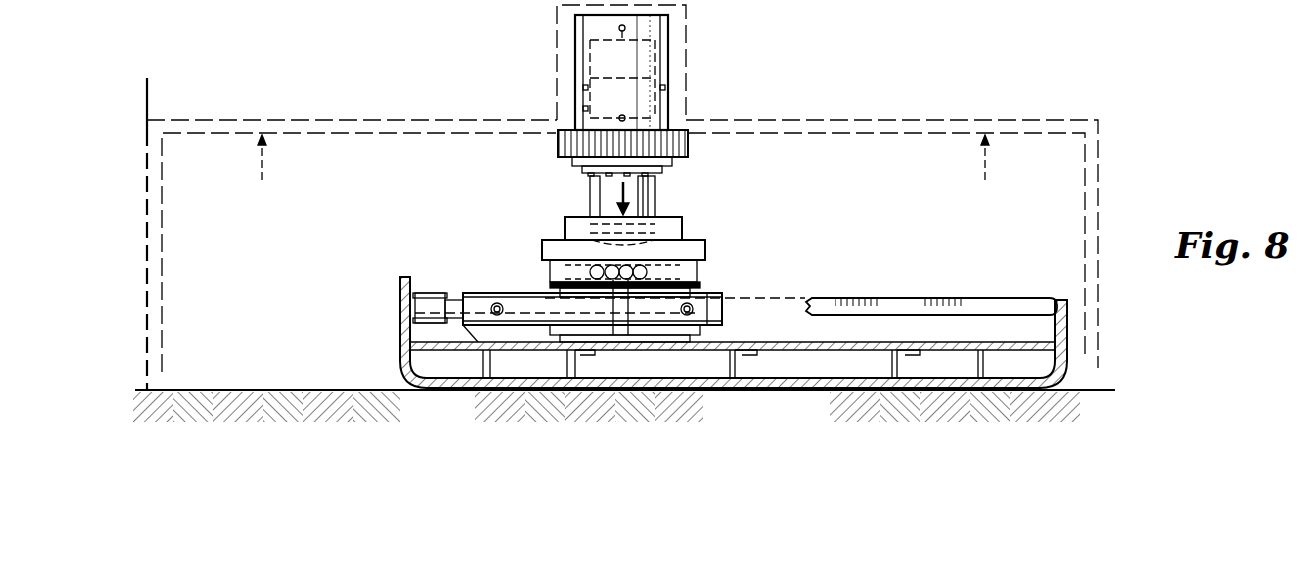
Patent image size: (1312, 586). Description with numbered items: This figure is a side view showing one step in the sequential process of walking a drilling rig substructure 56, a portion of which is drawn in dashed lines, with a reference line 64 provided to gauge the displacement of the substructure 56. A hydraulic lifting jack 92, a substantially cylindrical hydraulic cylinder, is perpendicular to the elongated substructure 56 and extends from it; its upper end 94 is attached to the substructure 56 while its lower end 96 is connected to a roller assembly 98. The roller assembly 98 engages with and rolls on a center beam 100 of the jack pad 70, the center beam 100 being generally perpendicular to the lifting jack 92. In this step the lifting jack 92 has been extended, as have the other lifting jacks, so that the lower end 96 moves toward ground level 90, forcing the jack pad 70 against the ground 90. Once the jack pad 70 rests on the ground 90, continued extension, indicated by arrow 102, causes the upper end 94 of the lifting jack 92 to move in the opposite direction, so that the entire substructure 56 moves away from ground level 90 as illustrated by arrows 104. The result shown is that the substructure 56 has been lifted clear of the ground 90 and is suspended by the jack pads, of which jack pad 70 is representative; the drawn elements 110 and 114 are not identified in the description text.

The substructure 56 is at (1090, 212).
The reference line 64 is at (148, 92).
The jack pad 70 is at (1062, 320).
The ground level 90 is at (1105, 390).
The hydraulic lifting jack 92 is at (652, 123).
The upper end 94 is at (593, 37).
The lower end 96 is at (652, 190).
The roller assembly 98 is at (565, 272).
The center beam 100 is at (906, 298).
The arrow 102 is at (610, 182).
The arrows 104 is at (265, 150).
The slide assembly 110 is at (700, 292).
The block 114 is at (693, 248).